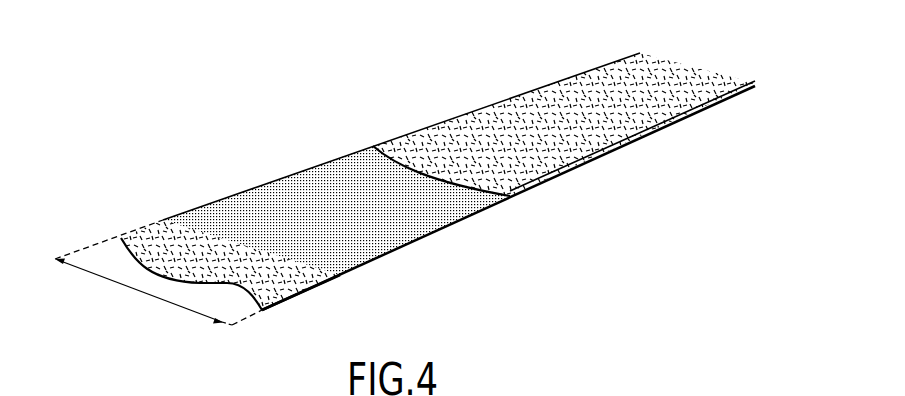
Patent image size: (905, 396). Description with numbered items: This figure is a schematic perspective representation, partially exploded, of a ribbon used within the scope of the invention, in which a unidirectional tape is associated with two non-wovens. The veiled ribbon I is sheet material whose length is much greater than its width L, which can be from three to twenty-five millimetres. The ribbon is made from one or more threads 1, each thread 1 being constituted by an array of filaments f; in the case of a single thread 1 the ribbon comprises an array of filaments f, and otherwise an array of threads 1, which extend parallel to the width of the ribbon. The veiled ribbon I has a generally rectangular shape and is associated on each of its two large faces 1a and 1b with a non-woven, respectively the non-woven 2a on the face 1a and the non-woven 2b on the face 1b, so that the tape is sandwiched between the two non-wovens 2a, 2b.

The veiled ribbon I is at (163, 129).
The thread 1 is at (263, 174).
The large face 1a is at (417, 243).
The large face 1b is at (313, 263).
The non-woven 2a is at (547, 103).
The non-woven 2b is at (150, 240).
The filaments f is at (440, 199).
The width L is at (127, 286).